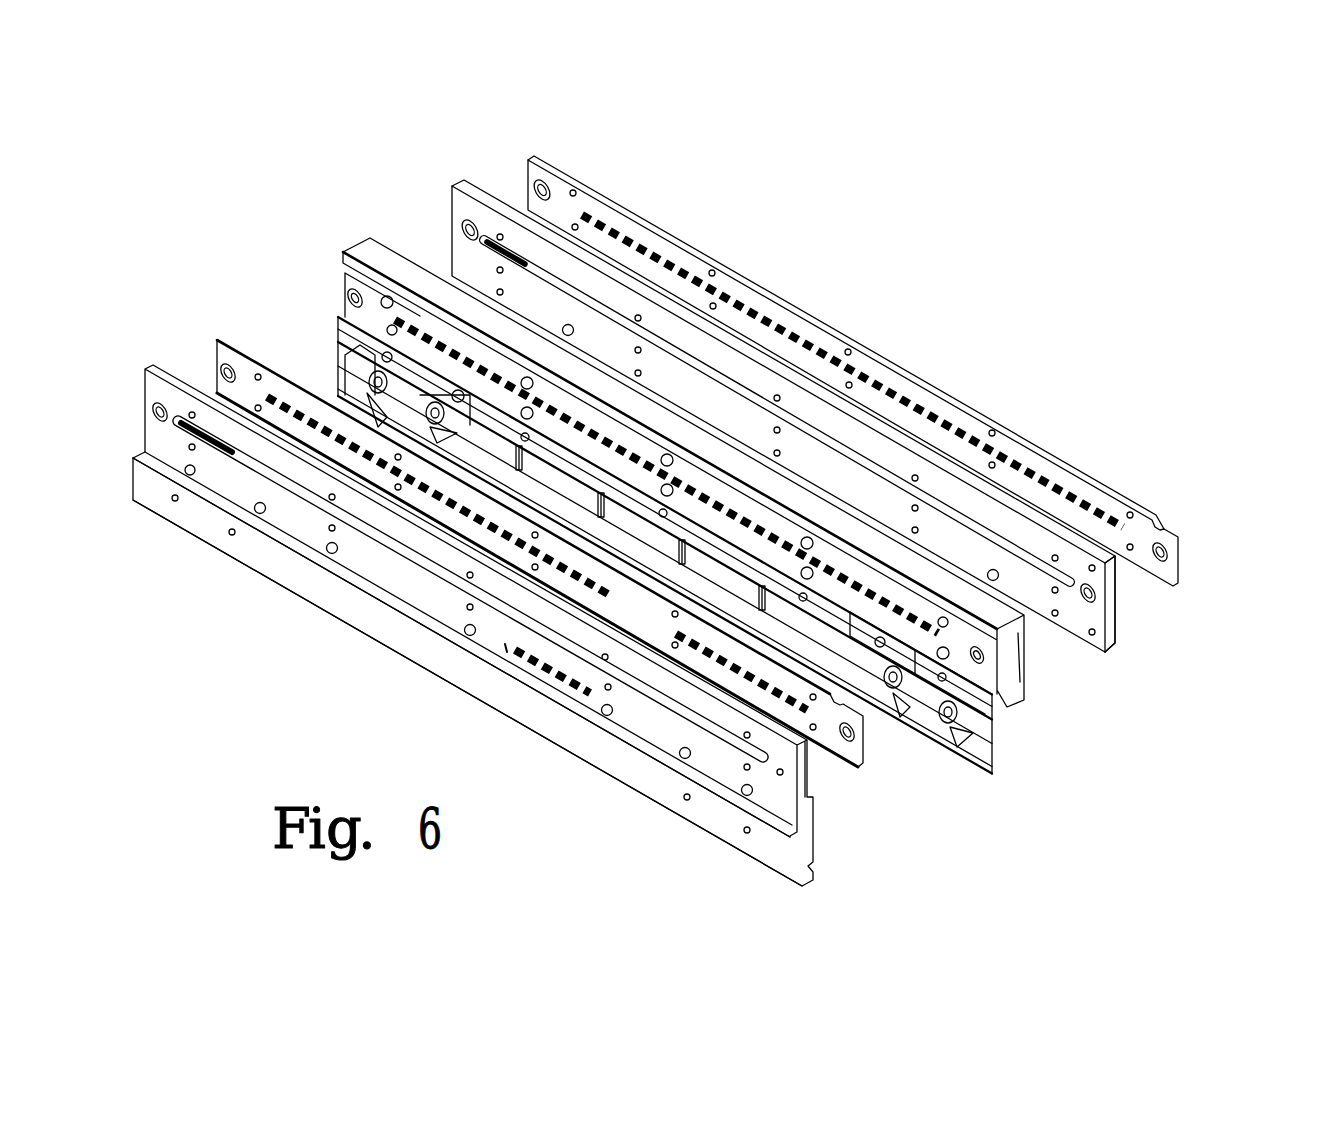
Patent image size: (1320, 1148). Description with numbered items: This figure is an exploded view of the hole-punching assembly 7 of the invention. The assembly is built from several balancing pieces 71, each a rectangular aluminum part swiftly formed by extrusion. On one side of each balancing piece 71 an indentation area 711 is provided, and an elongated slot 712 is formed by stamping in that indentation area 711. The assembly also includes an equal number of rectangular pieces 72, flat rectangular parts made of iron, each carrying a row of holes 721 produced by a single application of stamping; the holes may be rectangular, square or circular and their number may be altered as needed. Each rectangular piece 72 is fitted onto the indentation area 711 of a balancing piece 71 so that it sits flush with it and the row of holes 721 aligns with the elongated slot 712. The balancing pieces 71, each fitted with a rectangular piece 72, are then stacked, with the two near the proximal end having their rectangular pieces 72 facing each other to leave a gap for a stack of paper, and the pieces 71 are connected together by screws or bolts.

The hole-punching assembly 7 is at (440, 80).
The balancing piece 71 is at (538, 177).
The indentation area 711 is at (812, 805).
The elongated slot 712 is at (484, 240).
The row of holes 721 is at (426, 333).
The rectangular piece 72 is at (897, 705).